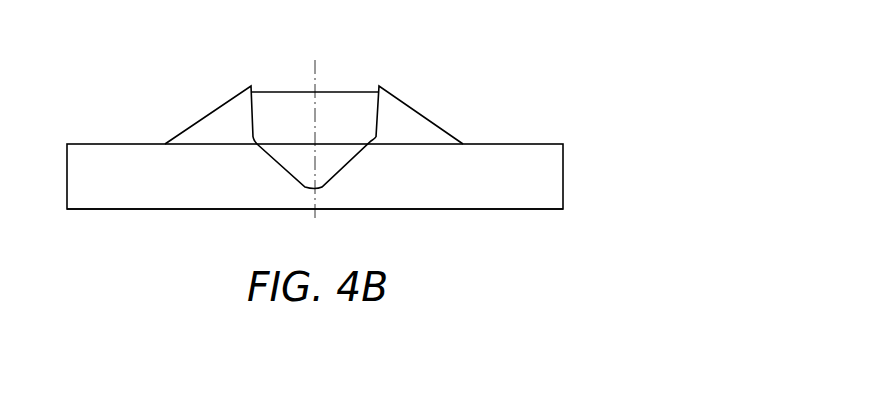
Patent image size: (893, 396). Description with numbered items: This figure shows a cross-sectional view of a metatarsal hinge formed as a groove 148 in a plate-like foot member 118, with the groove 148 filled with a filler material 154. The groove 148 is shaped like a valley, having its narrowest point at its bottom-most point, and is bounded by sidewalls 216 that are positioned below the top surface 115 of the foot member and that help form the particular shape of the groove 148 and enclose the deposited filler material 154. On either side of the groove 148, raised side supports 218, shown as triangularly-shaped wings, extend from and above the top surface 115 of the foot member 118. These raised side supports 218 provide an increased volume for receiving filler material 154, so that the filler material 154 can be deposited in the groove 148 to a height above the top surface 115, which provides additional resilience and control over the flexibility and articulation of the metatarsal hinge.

The top surface 115 is at (527, 144).
The substrate 118 is at (490, 209).
The raised side supports 218 is at (197, 122).
The sidewalls 216 is at (358, 152).
The filler material 154 is at (338, 73).
The groove 148 is at (293, 178).